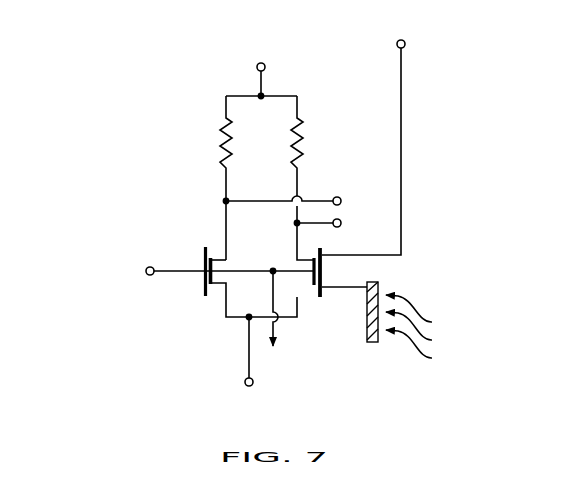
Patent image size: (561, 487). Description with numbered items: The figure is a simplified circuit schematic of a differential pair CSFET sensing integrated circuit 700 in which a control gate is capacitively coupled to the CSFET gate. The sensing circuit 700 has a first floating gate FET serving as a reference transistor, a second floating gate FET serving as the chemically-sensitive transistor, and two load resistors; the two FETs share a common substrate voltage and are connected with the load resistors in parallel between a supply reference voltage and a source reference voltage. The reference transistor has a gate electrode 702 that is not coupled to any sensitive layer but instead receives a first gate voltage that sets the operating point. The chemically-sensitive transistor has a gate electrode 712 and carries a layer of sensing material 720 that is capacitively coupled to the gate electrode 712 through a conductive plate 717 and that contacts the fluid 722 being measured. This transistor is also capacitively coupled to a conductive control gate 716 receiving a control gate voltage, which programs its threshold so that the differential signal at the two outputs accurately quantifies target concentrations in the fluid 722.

The sensing integrated circuit 700 is at (95, 42).
The gate electrode 702 is at (206, 296).
The gate electrode 712 is at (325, 270).
The conductive control gate 716 is at (324, 252).
The conductive plate 717 is at (325, 291).
The layer of sensing material 720 is at (367, 332).
The fluid 722 is at (447, 326).